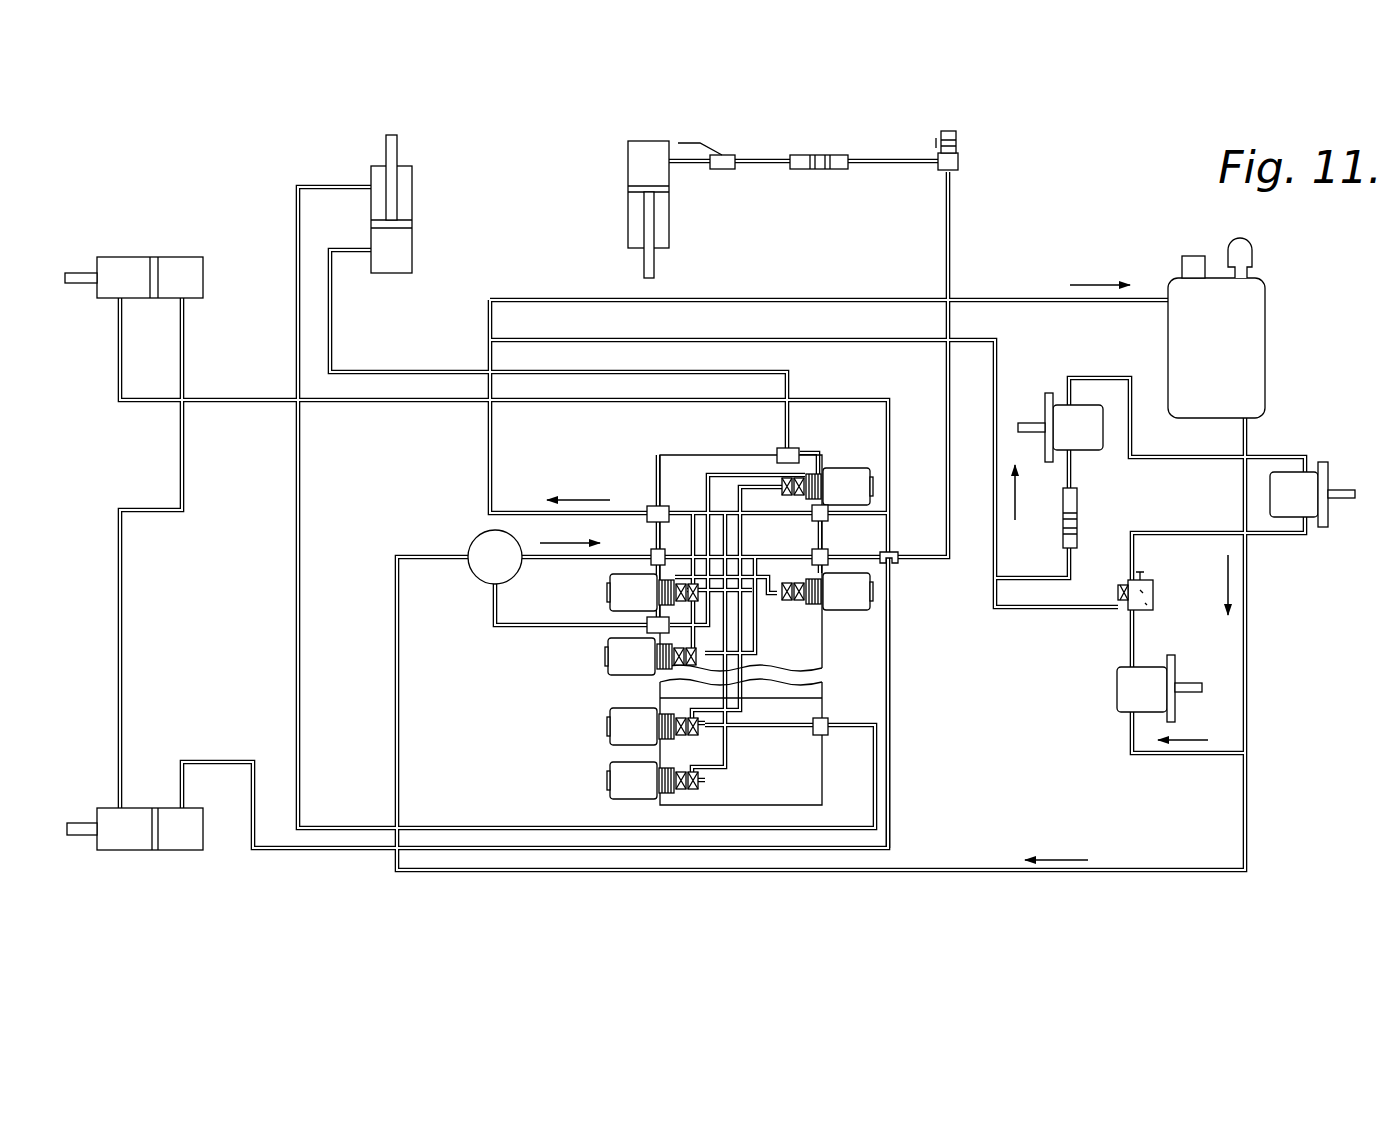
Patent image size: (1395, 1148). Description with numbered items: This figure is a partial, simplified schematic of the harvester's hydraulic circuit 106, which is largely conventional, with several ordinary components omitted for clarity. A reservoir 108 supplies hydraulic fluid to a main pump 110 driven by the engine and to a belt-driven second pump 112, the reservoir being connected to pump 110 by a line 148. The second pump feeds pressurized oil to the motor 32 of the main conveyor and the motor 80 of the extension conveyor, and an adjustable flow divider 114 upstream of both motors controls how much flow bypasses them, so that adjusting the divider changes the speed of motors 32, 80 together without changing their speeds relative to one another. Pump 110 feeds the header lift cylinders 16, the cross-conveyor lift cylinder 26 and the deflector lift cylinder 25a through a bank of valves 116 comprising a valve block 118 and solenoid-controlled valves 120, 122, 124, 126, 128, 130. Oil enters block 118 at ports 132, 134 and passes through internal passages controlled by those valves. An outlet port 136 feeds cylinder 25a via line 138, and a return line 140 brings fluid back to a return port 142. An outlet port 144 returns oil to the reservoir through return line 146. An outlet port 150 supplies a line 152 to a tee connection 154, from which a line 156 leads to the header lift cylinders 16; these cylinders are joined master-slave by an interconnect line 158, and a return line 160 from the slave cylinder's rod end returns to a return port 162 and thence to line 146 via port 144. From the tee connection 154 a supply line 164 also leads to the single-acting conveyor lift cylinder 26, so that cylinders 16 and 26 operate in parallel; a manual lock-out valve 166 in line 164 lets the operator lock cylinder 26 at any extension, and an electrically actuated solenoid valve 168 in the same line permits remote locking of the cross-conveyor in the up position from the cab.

The header lift cylinders 16 is at (176, 257).
The deflector lift cylinder 25a is at (405, 198).
The cross-conveyor lift cylinder 26 is at (670, 210).
The motor 32 is at (1062, 405).
The motor 80 is at (1305, 505).
The hydraulic circuit 106 is at (1083, 195).
The reservoir 108 is at (1250, 312).
The main pump 110 is at (470, 552).
The second pump 112 is at (1120, 698).
The adjustable flow divider 114 is at (1150, 593).
The bank of valves 116 is at (600, 435).
The valve block 118 is at (692, 455).
The solenoid-controlled valve 120 is at (845, 468).
The solenoid-controlled valve 122 is at (845, 612).
The solenoid-controlled valve 124 is at (616, 603).
The solenoid-controlled valve 126 is at (625, 658).
The solenoid-controlled valve 128 is at (616, 738).
The solenoid-controlled valve 130 is at (616, 790).
The port 132 is at (654, 549).
The port 134 is at (647, 628).
The outlet port 136 is at (785, 448).
The line 138 is at (792, 380).
The return line 140 is at (295, 548).
The return port 142 is at (815, 738).
The outlet port 144 is at (655, 506).
The return line 146 is at (488, 456).
The line 148 is at (1248, 630).
The outlet port 150 is at (823, 549).
The line 152 is at (893, 553).
The tee connection 154 is at (936, 581).
The line 156 is at (890, 731).
The interconnect line 158 is at (123, 612).
The return line 160 is at (217, 405).
The return port 162 is at (815, 521).
The supply line 164 is at (947, 393).
The manual lock-out valve 166 is at (728, 153).
The electrically actuated solenoid valve 168 is at (956, 152).